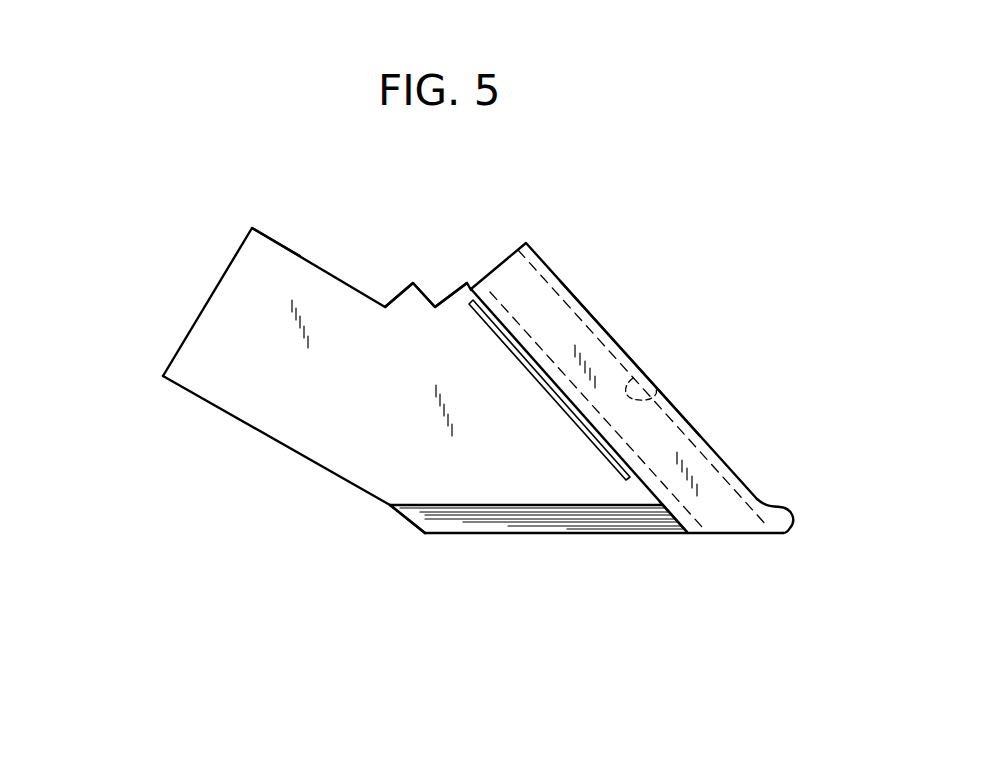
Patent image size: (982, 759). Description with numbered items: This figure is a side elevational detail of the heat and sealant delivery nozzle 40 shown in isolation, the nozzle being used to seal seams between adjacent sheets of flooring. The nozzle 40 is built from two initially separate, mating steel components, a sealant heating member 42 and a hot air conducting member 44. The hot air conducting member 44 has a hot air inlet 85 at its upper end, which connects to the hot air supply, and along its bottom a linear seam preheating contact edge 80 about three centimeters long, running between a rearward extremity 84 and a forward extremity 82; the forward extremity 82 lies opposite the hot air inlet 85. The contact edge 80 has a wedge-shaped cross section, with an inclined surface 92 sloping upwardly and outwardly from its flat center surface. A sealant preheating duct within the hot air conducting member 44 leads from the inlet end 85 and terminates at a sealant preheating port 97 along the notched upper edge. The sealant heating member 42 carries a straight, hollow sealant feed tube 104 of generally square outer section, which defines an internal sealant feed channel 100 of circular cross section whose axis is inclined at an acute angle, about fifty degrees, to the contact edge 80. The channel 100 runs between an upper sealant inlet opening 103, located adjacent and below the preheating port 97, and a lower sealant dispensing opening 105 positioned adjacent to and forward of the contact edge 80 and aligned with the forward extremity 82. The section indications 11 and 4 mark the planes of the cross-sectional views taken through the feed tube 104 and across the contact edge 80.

The section line 11- 11 is at (316, 141).
The section line 4- 4 is at (130, 551).
The heat and sealant delivery nozzle 40 is at (625, 392).
The sealant heating member 42 is at (582, 299).
The hot air conducting member 44 is at (290, 465).
The seam preheating contact edge 80 is at (576, 536).
The forward extremity 82 is at (680, 534).
The rearward extremity 84 is at (426, 535).
The hot air inlet 85 is at (260, 250).
The inclined surface 92 is at (490, 520).
The sealant preheating port 97 is at (429, 290).
The sealant feed channel 100 is at (647, 395).
The sealant inlet opening 103 is at (503, 265).
The sealant feed tube 104 is at (617, 340).
The sealant dispensing opening 105 is at (733, 534).